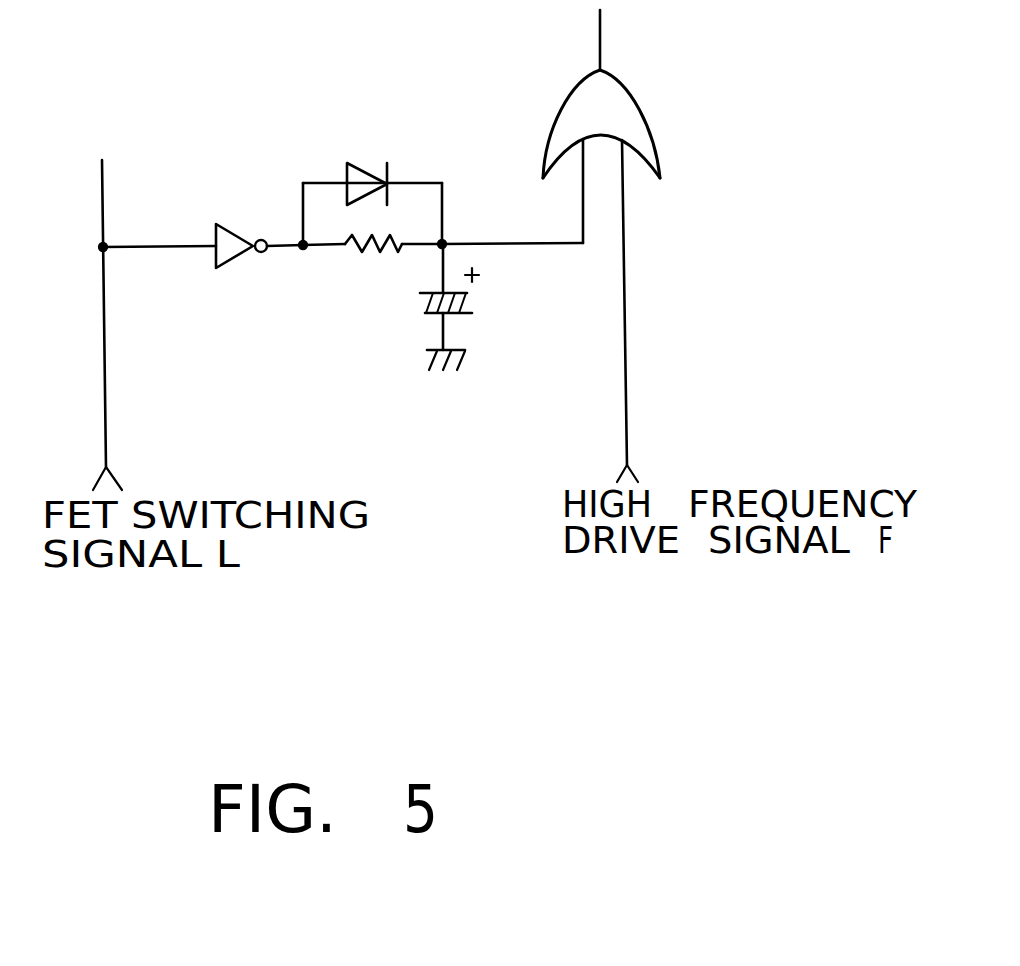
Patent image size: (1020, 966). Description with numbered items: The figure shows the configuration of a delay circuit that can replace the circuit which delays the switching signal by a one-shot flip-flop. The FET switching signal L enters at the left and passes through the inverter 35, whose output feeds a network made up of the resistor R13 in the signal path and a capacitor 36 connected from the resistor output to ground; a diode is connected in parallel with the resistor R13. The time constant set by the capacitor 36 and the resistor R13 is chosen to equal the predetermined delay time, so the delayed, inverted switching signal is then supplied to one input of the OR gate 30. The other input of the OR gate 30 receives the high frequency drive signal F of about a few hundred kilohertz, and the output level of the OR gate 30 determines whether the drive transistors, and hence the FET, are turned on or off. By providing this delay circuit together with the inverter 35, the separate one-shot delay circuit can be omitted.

The OR gate 30 is at (643, 108).
The inverter 35 is at (233, 230).
The resistor R13 is at (367, 258).
The capacitor 36 is at (467, 303).